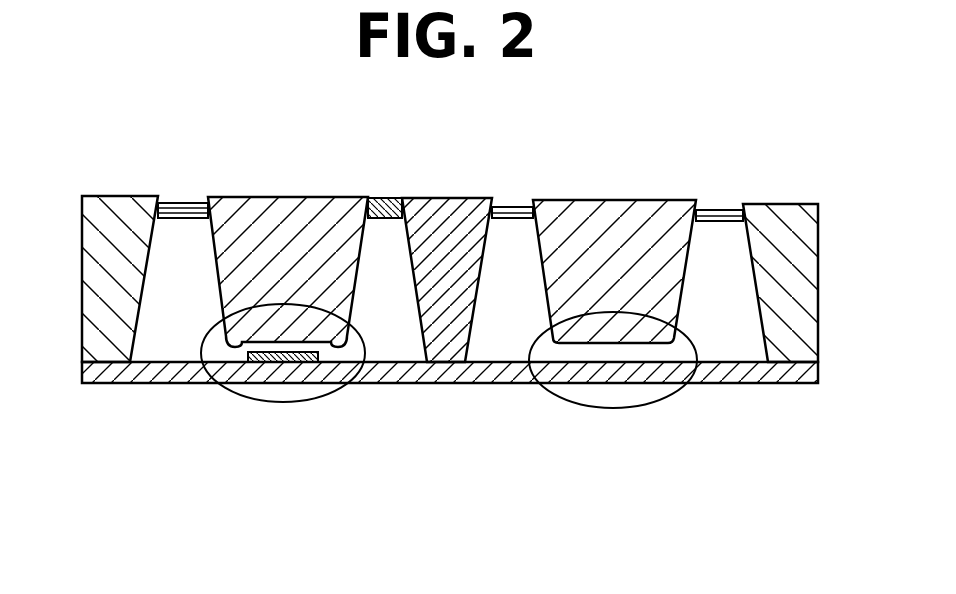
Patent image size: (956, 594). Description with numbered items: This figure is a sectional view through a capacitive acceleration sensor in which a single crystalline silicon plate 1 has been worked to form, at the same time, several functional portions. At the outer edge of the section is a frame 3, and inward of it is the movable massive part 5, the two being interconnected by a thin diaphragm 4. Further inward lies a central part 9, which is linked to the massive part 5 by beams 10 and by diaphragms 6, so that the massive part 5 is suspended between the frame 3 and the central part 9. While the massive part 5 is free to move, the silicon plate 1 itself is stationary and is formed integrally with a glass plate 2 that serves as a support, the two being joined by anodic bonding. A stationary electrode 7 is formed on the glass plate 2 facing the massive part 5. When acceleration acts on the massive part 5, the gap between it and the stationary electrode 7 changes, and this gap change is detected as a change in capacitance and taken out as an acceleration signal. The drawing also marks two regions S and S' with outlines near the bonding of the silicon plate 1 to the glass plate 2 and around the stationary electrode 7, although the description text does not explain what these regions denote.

The single crystalline silicon plate 1 is at (112, 196).
The glass plate 2 is at (447, 384).
The frame 3 is at (780, 205).
The diaphragm 4 is at (715, 208).
The massive part 5 is at (620, 202).
The diaphragms 6 is at (510, 205).
The stationary electrode 7 is at (323, 388).
The central part 9 is at (452, 202).
The beams 10 is at (380, 202).
The bonding region S is at (613, 397).
The bonding region S' is at (283, 389).